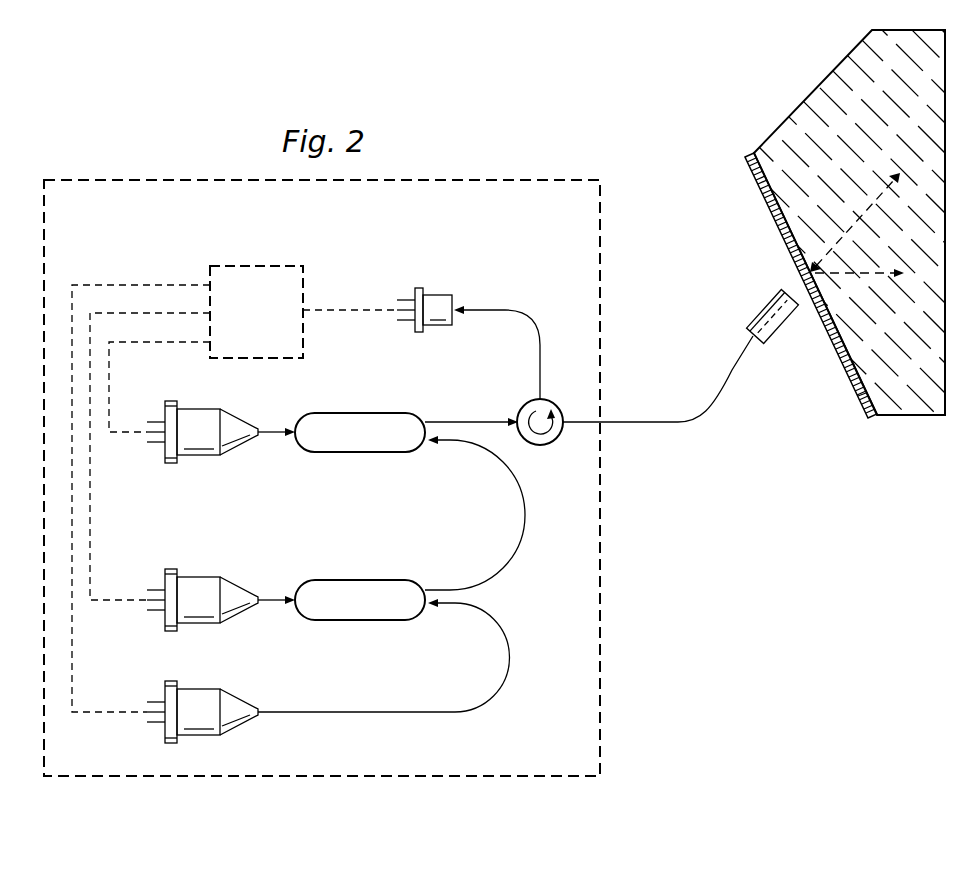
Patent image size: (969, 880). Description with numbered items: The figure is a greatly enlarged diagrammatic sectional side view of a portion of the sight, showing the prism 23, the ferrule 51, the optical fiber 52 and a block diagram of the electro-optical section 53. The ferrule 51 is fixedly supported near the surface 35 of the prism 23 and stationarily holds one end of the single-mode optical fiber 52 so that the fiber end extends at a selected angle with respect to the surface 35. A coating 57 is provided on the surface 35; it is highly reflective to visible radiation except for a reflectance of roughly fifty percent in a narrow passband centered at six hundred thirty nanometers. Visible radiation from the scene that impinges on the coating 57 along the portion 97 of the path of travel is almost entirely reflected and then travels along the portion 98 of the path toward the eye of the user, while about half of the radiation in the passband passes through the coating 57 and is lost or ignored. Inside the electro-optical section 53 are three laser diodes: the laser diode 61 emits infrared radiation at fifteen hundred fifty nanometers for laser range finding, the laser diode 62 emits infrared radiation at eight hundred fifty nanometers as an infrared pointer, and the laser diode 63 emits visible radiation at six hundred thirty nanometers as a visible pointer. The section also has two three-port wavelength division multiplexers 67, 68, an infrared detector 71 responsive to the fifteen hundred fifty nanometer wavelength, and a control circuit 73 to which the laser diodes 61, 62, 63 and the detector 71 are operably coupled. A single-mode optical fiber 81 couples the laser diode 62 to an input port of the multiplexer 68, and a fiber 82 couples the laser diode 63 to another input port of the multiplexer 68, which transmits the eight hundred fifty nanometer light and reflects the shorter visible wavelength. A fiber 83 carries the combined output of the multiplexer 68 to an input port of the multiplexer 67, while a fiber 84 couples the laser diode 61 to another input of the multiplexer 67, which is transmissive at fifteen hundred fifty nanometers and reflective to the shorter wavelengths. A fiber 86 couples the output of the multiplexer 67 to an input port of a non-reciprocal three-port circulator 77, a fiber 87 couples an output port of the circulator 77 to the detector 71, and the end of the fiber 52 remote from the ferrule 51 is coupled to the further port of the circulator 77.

The prism 23 is at (918, 417).
The surface of the prism 35 is at (864, 390).
The ferrule 51 is at (763, 305).
The single-mode optical fiber 52 is at (714, 388).
The electro-optical section 53 is at (97, 176).
The coating 57 is at (748, 156).
The laser diode 61 is at (240, 420).
The laser diode 62 is at (240, 588).
The laser diode 63 is at (245, 702).
The wavelength division multiplexer 67 is at (358, 413).
The wavelength division multiplexer 68 is at (358, 580).
The infrared detector 71 is at (437, 294).
The control circuit 73 is at (305, 288).
The three-port circulator 77 is at (552, 442).
The single-mode optical fiber 81 is at (272, 604).
The single-mode optical fiber 82 is at (365, 714).
The single-mode optical fiber 83 is at (525, 545).
The single-mode optical fiber 84 is at (272, 436).
The single-mode optical fiber 86 is at (470, 420).
The single-mode optical fiber 87 is at (530, 322).
The portion of the path 97 is at (847, 228).
The portion of the path 98 is at (870, 277).